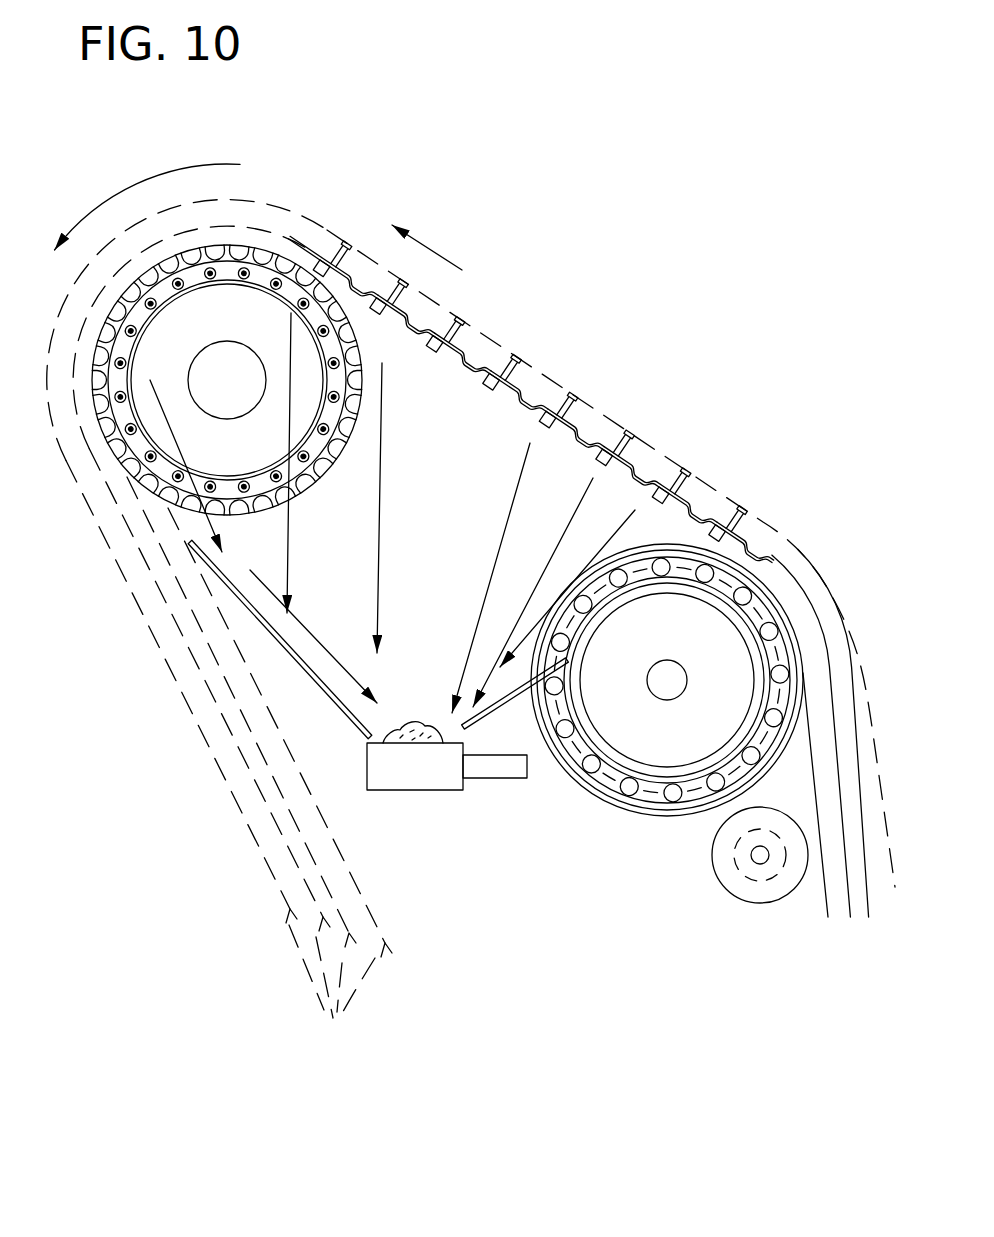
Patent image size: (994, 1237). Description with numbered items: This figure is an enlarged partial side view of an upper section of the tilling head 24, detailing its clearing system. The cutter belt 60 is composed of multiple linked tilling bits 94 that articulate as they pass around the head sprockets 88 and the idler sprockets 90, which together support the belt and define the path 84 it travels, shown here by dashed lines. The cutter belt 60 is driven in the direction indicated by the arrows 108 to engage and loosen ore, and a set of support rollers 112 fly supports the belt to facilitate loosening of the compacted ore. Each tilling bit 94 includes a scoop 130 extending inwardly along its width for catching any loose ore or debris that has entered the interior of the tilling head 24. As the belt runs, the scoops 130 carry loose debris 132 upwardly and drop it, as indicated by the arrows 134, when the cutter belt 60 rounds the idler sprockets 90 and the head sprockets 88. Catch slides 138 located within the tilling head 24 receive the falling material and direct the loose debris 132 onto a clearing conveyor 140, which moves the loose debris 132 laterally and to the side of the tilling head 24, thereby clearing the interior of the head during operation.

The tilling head 24 is at (680, 230).
The cutter belt 60 is at (552, 390).
The path traveled by cutter belt 84 is at (336, 1020).
The head sprockets 88 is at (273, 260).
The idler sprockets 90 is at (600, 793).
The tilling bits 94 is at (478, 337).
The arrows indicating cutter belt drive direction 108 is at (147, 176).
The support rollers 112 is at (720, 879).
The scoop 130 is at (492, 398).
The loose debris 132 is at (488, 386).
The arrows indicating dropping debris 134 is at (173, 423).
The catch slides 138 is at (338, 705).
The clearing conveyor 140 is at (422, 773).